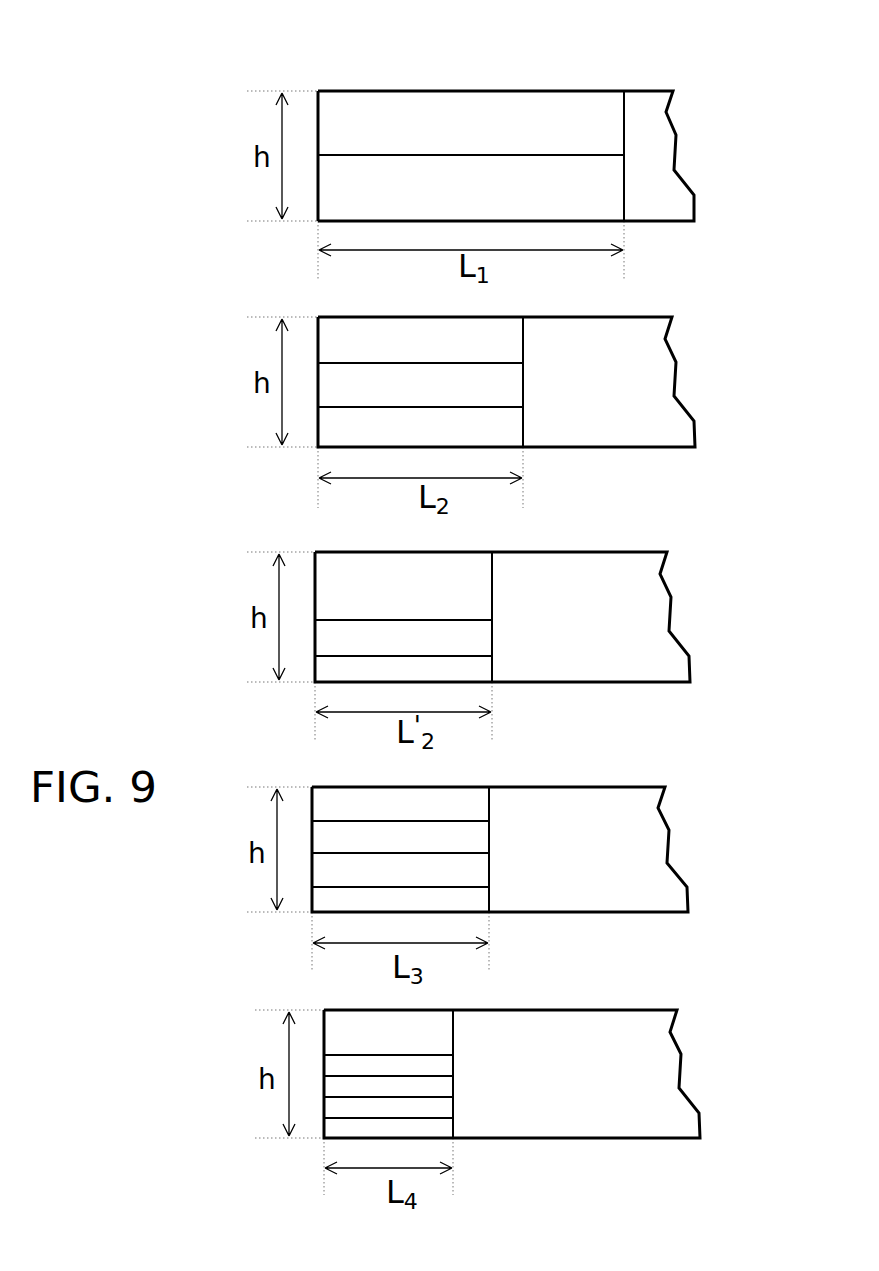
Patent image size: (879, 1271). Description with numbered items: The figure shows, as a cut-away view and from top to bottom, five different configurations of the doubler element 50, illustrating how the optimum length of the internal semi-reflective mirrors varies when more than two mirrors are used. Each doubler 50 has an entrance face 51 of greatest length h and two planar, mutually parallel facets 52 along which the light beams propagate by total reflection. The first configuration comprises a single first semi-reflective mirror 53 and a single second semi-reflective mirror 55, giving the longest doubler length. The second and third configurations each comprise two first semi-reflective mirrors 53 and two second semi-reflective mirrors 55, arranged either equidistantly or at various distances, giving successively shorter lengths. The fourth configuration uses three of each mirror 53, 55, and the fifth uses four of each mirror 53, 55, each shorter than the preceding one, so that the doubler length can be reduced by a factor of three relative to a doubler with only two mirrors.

The doubler element 50 is at (705, 155).
The entrance face 51 is at (320, 185).
The planar facets 52 is at (446, 219).
The first semi-reflective mirror 53 is at (497, 153).
The second semi-reflective mirror 55 is at (585, 117).